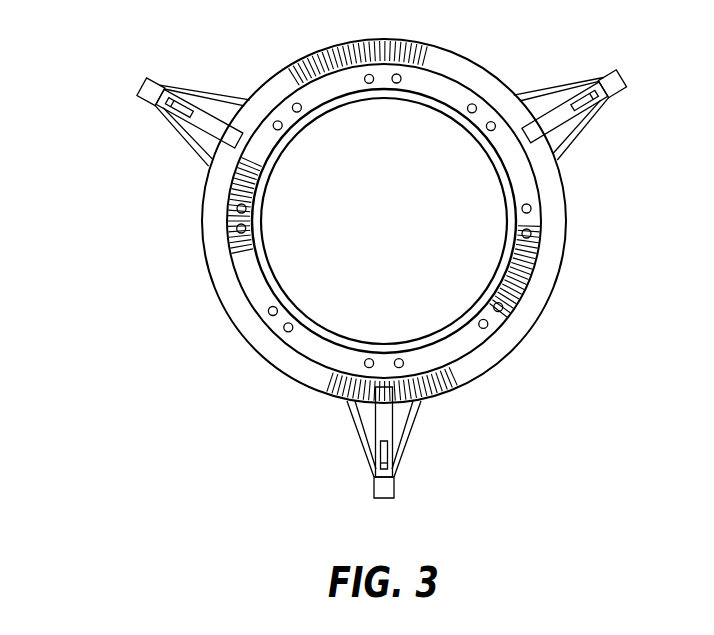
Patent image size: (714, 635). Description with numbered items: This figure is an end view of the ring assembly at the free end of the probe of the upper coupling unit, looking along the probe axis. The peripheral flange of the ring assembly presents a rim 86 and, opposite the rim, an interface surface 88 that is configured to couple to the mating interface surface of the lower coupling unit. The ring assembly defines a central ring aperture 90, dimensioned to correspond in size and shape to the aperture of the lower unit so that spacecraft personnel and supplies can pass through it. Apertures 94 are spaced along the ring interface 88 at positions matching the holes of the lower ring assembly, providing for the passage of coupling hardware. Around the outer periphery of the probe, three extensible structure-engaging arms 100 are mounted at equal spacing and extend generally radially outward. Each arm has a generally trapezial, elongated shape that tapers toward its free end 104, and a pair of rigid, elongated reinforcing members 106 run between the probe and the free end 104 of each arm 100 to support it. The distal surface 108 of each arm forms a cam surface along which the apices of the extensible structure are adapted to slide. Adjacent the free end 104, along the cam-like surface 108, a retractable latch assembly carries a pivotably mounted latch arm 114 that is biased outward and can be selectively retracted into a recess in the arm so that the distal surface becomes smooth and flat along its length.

The rim 86 is at (285, 72).
The interface surface 88 is at (450, 94).
The ring aperture 90 is at (401, 211).
The apertures 94 is at (271, 317).
The extensible structure-engaging arms 100 is at (145, 91).
The free end 104 is at (147, 104).
The reinforcing members 106 is at (215, 93).
The distal surface 108 is at (190, 138).
The latch arm 114 is at (586, 92).